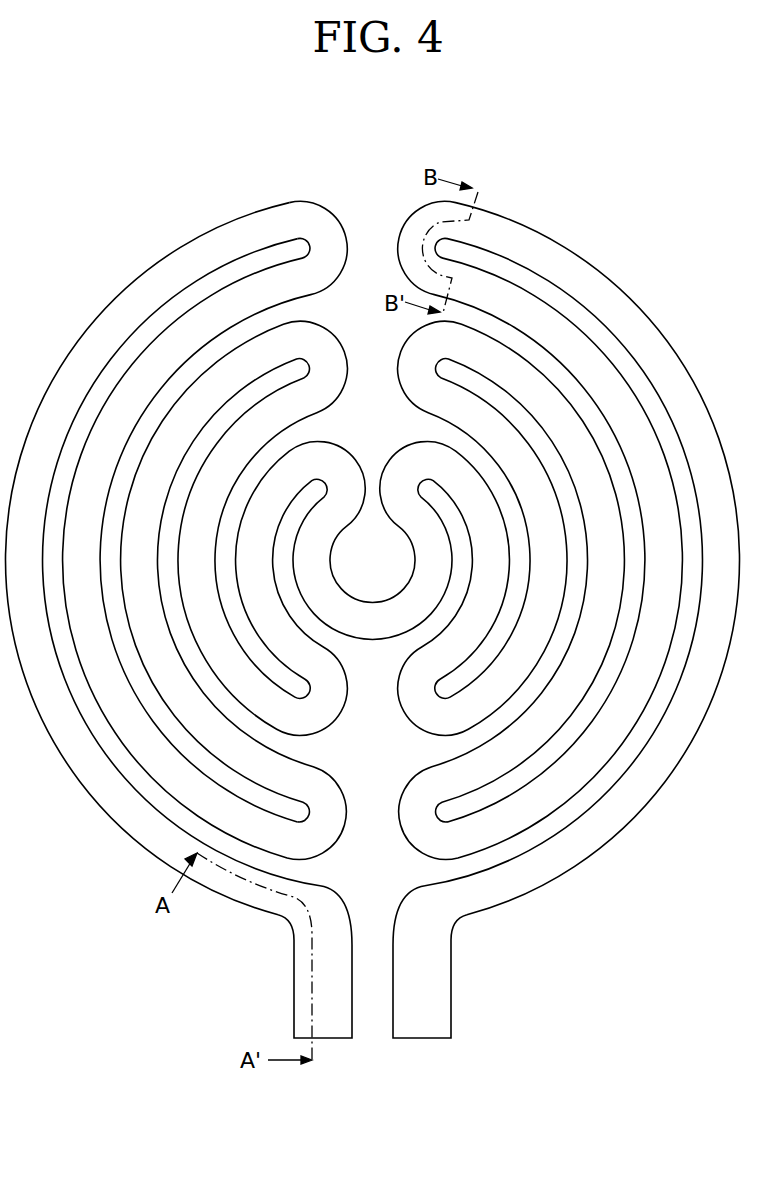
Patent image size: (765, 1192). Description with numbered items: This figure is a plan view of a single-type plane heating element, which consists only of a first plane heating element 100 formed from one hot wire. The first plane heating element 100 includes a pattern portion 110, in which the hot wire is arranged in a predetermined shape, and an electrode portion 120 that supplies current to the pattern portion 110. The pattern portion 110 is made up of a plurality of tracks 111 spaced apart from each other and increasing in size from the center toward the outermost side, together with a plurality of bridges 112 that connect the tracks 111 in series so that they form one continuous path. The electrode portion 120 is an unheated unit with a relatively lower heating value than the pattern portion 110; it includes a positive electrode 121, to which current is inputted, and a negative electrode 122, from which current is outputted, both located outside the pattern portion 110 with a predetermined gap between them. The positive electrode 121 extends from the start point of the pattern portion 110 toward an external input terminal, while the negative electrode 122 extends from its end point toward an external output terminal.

The first plane heating element 100 is at (372, 631).
The pattern portion 110 is at (372, 497).
The tracks 111 is at (245, 216).
The bridges 112 is at (235, 117).
The electrode portion 120 is at (372, 1035).
The positive electrode 121 is at (328, 1032).
The negative electrode 122 is at (421, 1032).